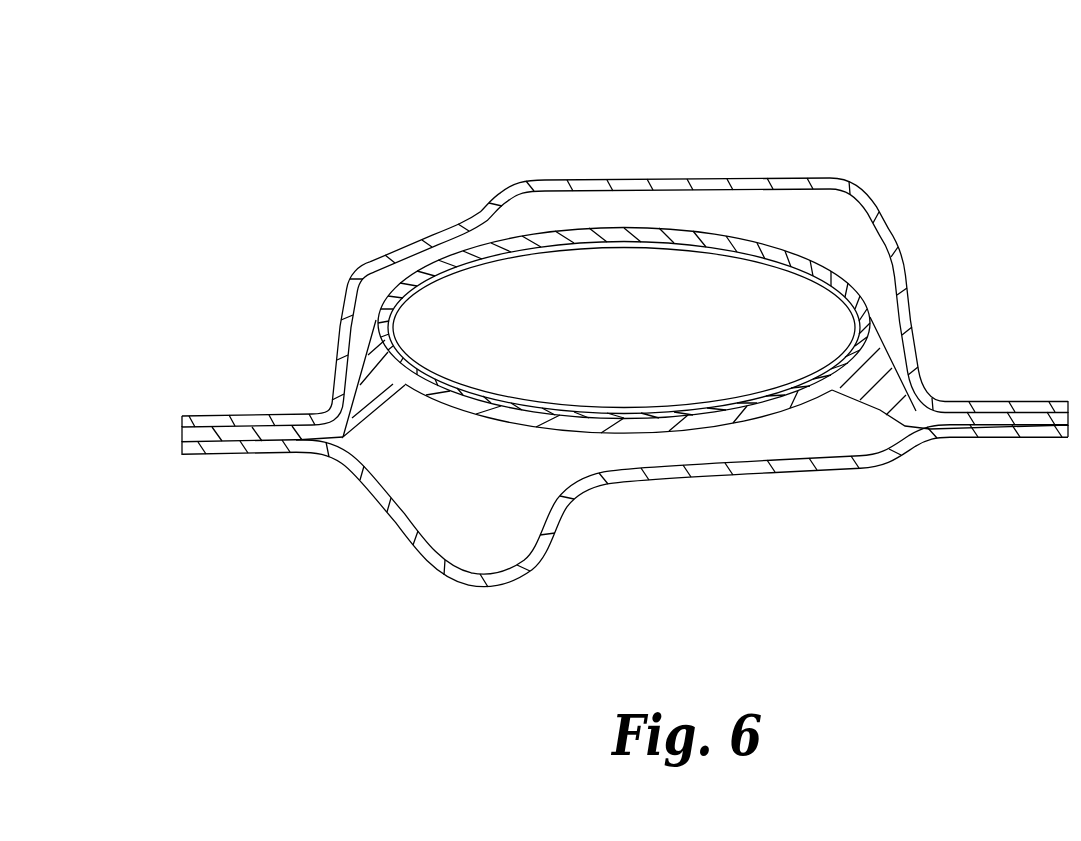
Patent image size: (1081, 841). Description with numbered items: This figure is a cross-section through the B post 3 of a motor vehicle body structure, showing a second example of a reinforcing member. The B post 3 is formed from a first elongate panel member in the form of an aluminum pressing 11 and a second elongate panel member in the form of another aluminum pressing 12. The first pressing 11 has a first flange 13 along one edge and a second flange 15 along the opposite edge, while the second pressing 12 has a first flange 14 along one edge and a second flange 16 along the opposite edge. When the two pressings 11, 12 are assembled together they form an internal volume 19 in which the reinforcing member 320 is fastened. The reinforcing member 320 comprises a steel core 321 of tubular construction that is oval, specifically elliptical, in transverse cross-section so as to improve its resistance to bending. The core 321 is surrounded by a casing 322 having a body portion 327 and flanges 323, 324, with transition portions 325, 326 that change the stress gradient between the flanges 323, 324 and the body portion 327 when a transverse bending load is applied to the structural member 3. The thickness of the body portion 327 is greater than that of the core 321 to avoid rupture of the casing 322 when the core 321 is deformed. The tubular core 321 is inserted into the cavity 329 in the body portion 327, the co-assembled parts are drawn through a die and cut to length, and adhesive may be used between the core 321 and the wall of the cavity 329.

The B post 3 is at (465, 198).
The first pressing 11 is at (357, 265).
The second pressing 12 is at (597, 487).
The first flange 13 is at (205, 414).
The first flange 14 is at (276, 456).
The second flange 15 is at (990, 400).
The second flange 16 is at (1007, 438).
The internal volume 19 is at (534, 468).
The reinforcing member 320 is at (593, 227).
The steel core 321 is at (668, 242).
The casing 322 is at (753, 235).
The flange 323 is at (213, 452).
The flange 324 is at (965, 428).
The transition portion 325 is at (387, 395).
The transition portion 326 is at (848, 400).
The body portion 327 is at (820, 262).
The cavity 329 is at (707, 417).